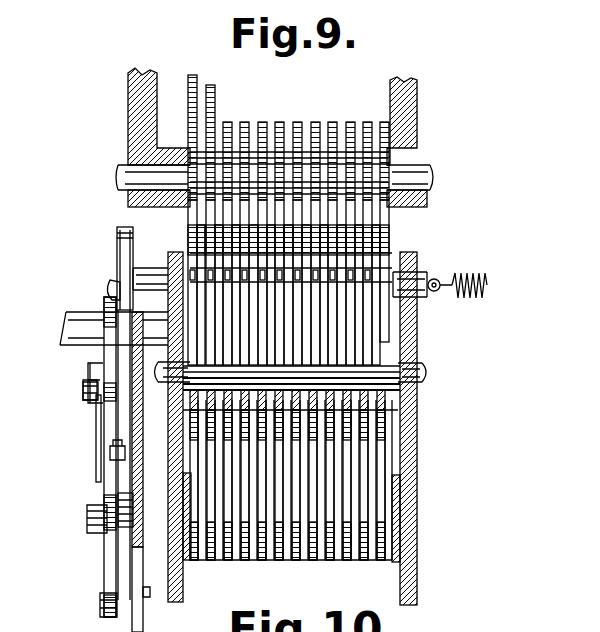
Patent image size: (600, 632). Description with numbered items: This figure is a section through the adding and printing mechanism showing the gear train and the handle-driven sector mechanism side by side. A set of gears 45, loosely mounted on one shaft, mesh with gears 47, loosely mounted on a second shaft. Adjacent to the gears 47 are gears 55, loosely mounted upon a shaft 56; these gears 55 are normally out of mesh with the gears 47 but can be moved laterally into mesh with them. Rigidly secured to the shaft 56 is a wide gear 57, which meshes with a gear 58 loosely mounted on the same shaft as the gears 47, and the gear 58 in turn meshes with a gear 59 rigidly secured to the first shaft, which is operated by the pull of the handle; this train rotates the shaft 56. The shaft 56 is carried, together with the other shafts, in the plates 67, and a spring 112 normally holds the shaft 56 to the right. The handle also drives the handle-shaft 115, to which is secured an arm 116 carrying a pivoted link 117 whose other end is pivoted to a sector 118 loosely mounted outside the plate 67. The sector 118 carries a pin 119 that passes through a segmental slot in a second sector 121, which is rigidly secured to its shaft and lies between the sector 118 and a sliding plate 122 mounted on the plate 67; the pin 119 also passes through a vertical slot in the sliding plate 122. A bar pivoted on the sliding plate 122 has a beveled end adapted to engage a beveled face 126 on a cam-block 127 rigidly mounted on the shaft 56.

The gears 45 is at (215, 93).
The gears 47 is at (333, 122).
The gears 55 is at (392, 258).
The shaft 56 is at (152, 288).
The wide gear 57 is at (196, 238).
The gear 58 is at (190, 211).
The gear 59 is at (189, 88).
The plates 67 is at (167, 460).
The spring 112 is at (488, 285).
The handle-shaft 115 is at (84, 312).
The arm 116 is at (107, 357).
The link 117 is at (100, 436).
The sector 118 is at (110, 563).
The pin 119 is at (148, 597).
The second sector 121 is at (123, 578).
The sliding plate 122 is at (128, 487).
The beveled face 126 is at (112, 298).
The cam-block 127 is at (125, 250).